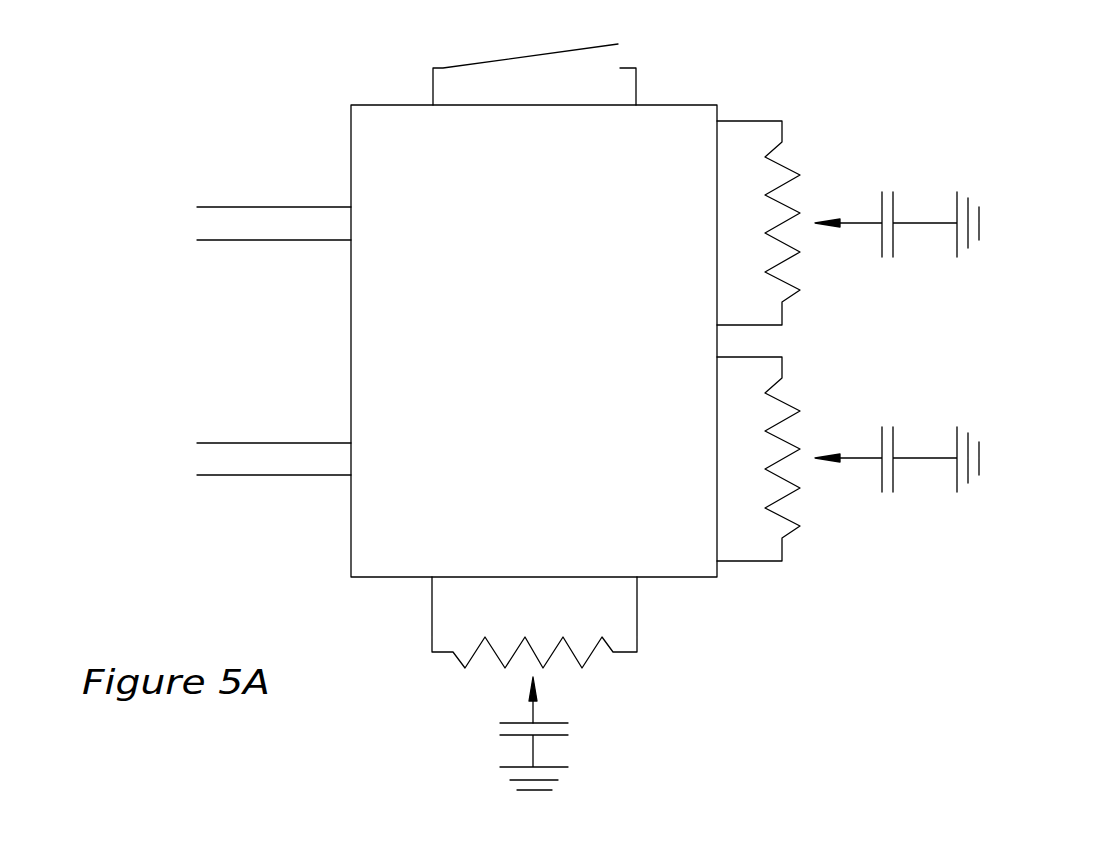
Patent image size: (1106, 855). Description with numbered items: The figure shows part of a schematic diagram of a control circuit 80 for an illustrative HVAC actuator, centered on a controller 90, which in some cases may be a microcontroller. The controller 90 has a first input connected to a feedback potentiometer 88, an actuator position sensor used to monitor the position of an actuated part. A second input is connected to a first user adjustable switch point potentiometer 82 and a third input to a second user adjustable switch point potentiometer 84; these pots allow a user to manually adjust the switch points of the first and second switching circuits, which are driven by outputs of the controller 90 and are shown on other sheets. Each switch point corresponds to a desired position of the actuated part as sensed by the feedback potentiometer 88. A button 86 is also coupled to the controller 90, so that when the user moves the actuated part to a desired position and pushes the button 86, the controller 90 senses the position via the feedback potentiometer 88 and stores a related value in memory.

The control circuit 80 is at (905, 92).
The first user adjustable switch point potentiometer 82 is at (981, 268).
The second user adjustable switch point potentiometer 84 is at (981, 503).
The button 86 is at (641, 46).
The feedback potentiometer 88 is at (637, 615).
The controller 90 is at (705, 115).